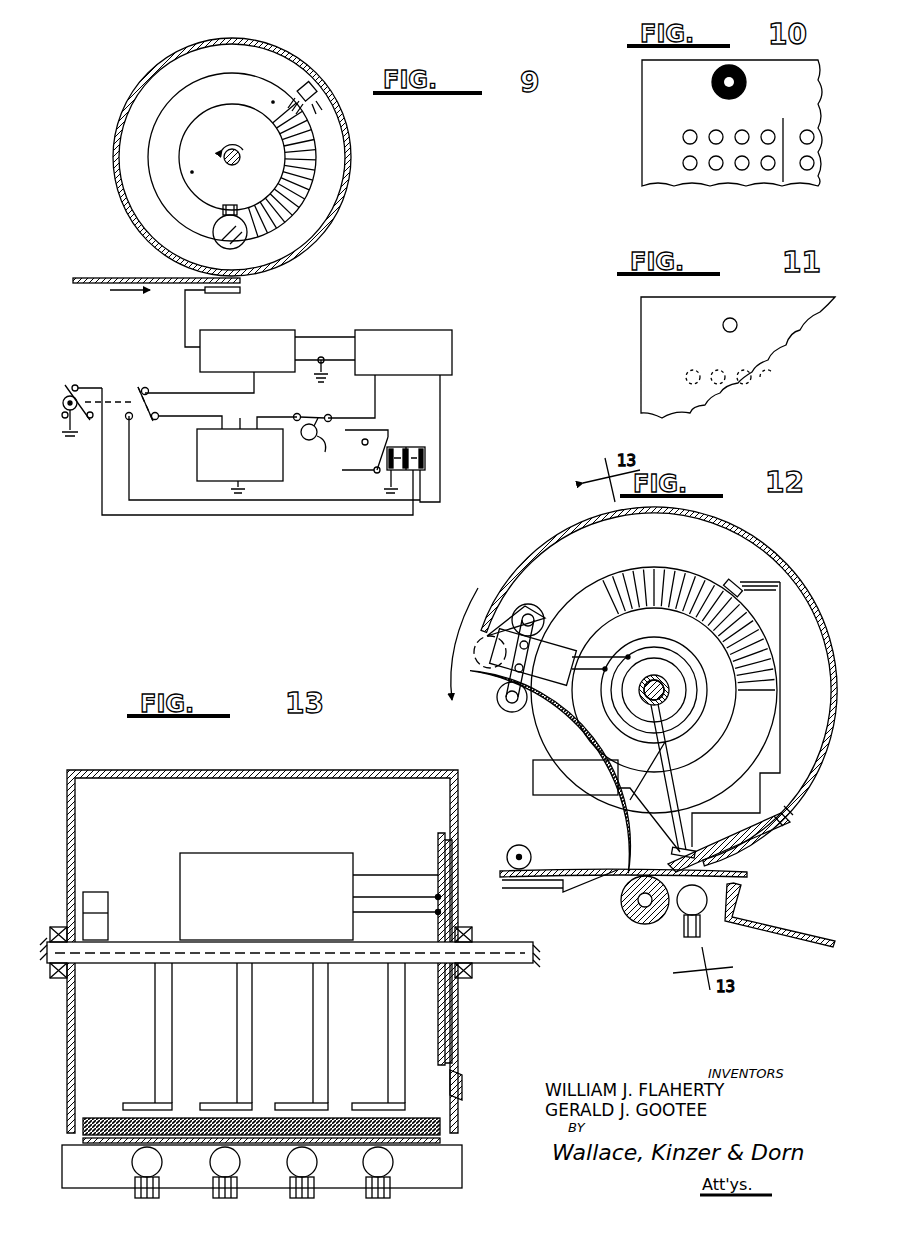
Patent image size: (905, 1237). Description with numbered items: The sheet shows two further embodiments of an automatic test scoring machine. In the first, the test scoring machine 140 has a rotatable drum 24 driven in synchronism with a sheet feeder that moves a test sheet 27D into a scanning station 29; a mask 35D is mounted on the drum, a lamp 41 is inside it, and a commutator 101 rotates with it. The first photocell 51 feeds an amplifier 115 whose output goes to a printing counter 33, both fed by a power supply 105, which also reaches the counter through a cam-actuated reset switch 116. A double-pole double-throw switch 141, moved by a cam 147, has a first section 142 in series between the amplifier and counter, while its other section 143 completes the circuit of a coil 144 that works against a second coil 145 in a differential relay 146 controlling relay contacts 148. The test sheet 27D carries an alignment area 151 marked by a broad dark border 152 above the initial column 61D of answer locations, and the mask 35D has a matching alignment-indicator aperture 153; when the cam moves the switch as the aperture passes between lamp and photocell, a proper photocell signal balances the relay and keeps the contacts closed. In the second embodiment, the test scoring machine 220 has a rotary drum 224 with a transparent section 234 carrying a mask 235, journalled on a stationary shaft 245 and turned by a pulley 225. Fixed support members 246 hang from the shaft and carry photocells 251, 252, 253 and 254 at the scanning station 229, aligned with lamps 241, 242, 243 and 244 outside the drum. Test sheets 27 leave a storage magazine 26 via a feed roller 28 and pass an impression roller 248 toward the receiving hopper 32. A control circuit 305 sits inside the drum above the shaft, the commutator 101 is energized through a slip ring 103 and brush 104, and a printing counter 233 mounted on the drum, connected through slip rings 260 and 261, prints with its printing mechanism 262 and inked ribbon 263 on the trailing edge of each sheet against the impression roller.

In FIG. 9, the commutator 101 is at (264, 94).
In FIG. 12, the commutator 101 is at (672, 590).
In FIG. 13, the commutator 101 is at (438, 856).
In FIG. 9, the rotatable drum 24 is at (316, 88).
In FIG. 12, the rotatable drum 24 is at (752, 588).
In FIG. 9, the mask 35D is at (115, 137).
In FIG. 11, the mask 35D is at (651, 330).
In FIG. 9, the lamp 41 is at (246, 238).
In FIG. 9, the test sheet 27D is at (108, 278).
In FIG. 10, the test sheet 27D is at (642, 88).
In FIG. 9, the scanning station 29 is at (258, 282).
In FIG. 9, the first photocell 51 is at (225, 293).
In FIG. 9, the amplifier 115 is at (285, 333).
In FIG. 9, the power supply 105 is at (446, 348).
In FIG. 9, the test scoring machine 140 is at (404, 240).
In FIG. 9, the switch section 143 is at (76, 385).
In FIG. 9, the cam 147 is at (65, 395).
In FIG. 9, the double-pole double-throw switch 141 is at (125, 378).
In FIG. 9, the switch section 142 is at (158, 410).
In FIG. 9, the printing counter 33 is at (247, 444).
In FIG. 9, the cam-actuated reset switch 116 is at (313, 438).
In FIG. 9, the relay contacts 148 is at (363, 451).
In FIG. 9, the second coil 145 is at (400, 447).
In FIG. 9, the differential relay 146 is at (418, 437).
In FIG. 9, the coil 144 is at (427, 462).
In FIG. 10, the dark border 152 is at (711, 83).
In FIG. 10, the alignment area 151 is at (747, 83).
In FIG. 10, the initial column of answer locations 61D is at (704, 118).
In FIG. 11, the alignment-indicator aperture 153 is at (738, 325).
In FIG. 12, the rotary drum 224 is at (770, 568).
In FIG. 13, the rotary drum 224 is at (224, 770).
In FIG. 12, the test scoring machine 220 is at (493, 585).
In FIG. 13, the test scoring machine 220 is at (398, 768).
In FIG. 12, the inked ribbon 263 is at (508, 620).
In FIG. 12, the printing counter 233 is at (543, 657).
In FIG. 13, the printing counter 233 is at (98, 905).
In FIG. 12, the printing mechanism 262 is at (475, 653).
In FIG. 12, the slip ring 260 is at (683, 638).
In FIG. 13, the slip ring 260 is at (436, 897).
In FIG. 12, the slip ring 261 is at (638, 652).
In FIG. 13, the slip ring 261 is at (437, 913).
In FIG. 12, the stationary shaft 245 is at (678, 688).
In FIG. 13, the stationary shaft 245 is at (492, 947).
In FIG. 12, the slip ring 103 is at (728, 727).
In FIG. 12, the control circuit 305 is at (534, 762).
In FIG. 13, the control circuit 305 is at (333, 868).
In FIG. 12, the fixed support members 246 is at (672, 792).
In FIG. 13, the fixed support members 246 is at (240, 1019).
In FIG. 12, the brush 104 is at (639, 797).
In FIG. 12, the transparent section 234 is at (588, 848).
In FIG. 12, the photocell 251 is at (697, 849).
In FIG. 13, the photocell 251 is at (137, 1103).
In FIG. 13, the photocell 252 is at (220, 1103).
In FIG. 13, the photocell 253 is at (298, 1103).
In FIG. 13, the photocell 254 is at (376, 1103).
In FIG. 12, the mask 235 is at (748, 850).
In FIG. 12, the storage magazine 26 is at (497, 855).
In FIG. 12, the feed roller 28 is at (519, 845).
In FIG. 12, the test sheets 27 is at (612, 884).
In FIG. 13, the test sheets 27 is at (445, 1140).
In FIG. 12, the impression roller 248 is at (632, 918).
In FIG. 13, the impression roller 248 is at (462, 1165).
In FIG. 12, the lamp 241 is at (708, 897).
In FIG. 13, the lamp 241 is at (132, 1165).
In FIG. 13, the lamp 242 is at (210, 1166).
In FIG. 13, the lamp 243 is at (287, 1166).
In FIG. 13, the lamp 244 is at (364, 1166).
In FIG. 12, the scanning station 229 is at (668, 918).
In FIG. 13, the scanning station 229 is at (436, 1153).
In FIG. 12, the receiving hopper 32 is at (820, 936).
In FIG. 13, the pulley 225 is at (462, 1090).